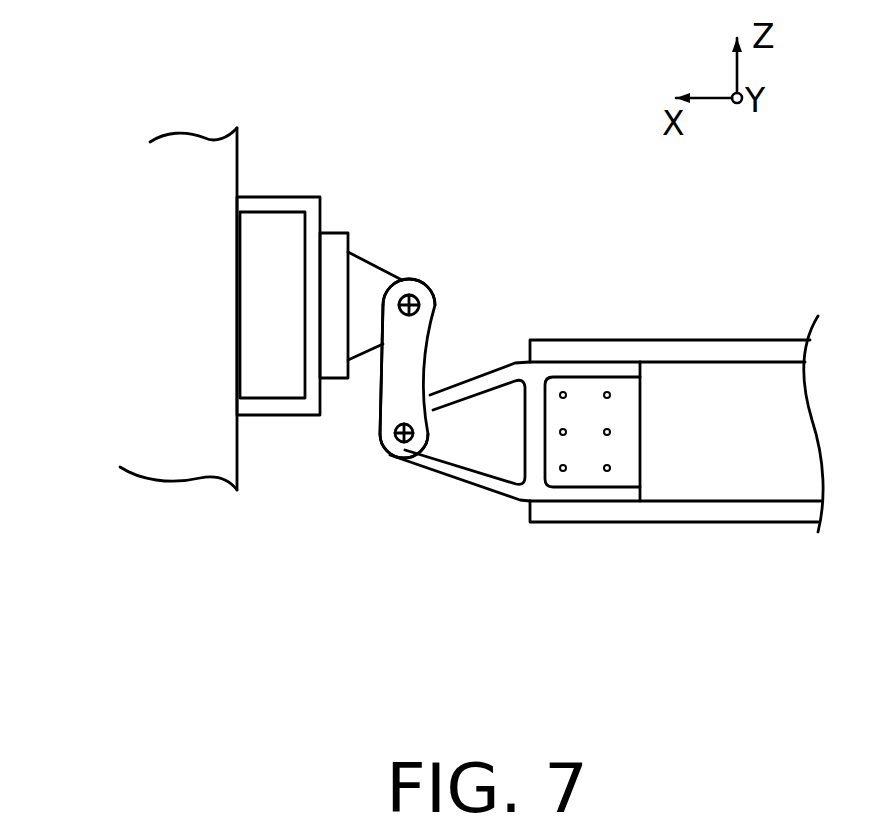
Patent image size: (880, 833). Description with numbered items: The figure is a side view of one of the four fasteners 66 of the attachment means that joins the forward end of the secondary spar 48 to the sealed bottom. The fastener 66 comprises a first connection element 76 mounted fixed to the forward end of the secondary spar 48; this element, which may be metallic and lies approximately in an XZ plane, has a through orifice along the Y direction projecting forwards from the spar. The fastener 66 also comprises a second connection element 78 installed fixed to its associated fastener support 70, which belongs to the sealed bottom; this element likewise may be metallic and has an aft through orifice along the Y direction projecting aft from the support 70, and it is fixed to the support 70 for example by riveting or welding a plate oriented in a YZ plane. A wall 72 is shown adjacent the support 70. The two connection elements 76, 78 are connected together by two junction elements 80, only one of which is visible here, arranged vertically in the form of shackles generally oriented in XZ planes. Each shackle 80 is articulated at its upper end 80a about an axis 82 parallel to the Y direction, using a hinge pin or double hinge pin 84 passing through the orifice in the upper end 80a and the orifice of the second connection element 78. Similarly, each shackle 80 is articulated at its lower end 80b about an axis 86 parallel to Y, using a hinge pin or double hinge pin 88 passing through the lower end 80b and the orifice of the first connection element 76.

The secondary spar 48 is at (736, 350).
The fastener 66 is at (445, 632).
The fastener support 70 is at (270, 205).
The frame wall 72 is at (215, 284).
The first connection element 76 is at (500, 497).
The second connection element 78 is at (342, 378).
The junction element 80 is at (397, 363).
The upper end 80a is at (412, 282).
The lower end 80b is at (428, 450).
The axis 82 is at (435, 292).
The hinge pin 84 is at (403, 322).
The axis 86 is at (437, 322).
The hinge pin 88 is at (392, 448).